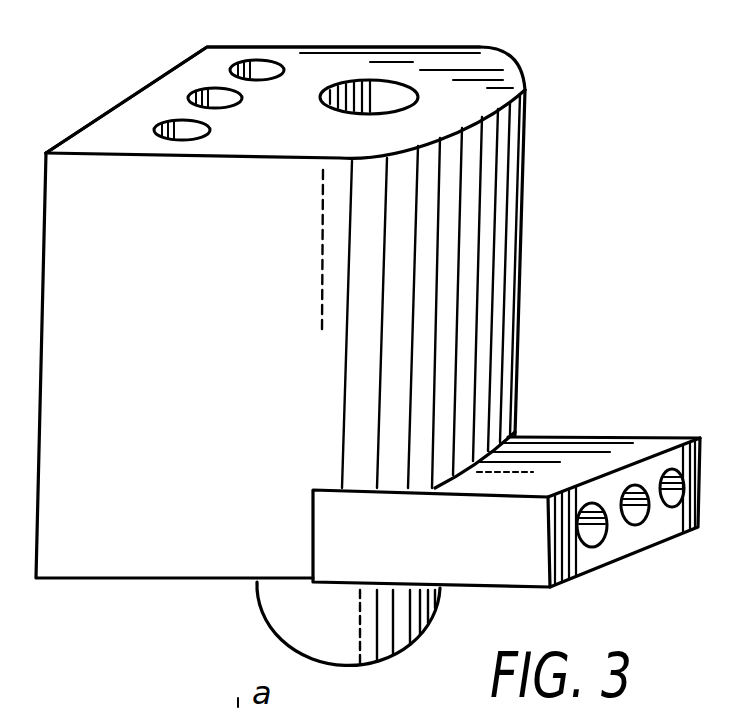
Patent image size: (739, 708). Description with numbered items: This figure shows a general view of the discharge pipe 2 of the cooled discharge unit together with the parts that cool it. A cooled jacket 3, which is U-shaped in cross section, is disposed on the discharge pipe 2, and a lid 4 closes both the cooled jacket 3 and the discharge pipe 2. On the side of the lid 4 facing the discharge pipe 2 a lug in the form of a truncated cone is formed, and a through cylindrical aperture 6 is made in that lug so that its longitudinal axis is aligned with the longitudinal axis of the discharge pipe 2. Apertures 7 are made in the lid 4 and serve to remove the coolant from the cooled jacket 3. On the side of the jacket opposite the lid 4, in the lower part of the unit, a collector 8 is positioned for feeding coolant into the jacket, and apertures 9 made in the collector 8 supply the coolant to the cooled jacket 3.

The discharge pipe 2 is at (258, 627).
The cooled jacket 3 is at (525, 270).
The lid 4 is at (117, 124).
The through cylindrical aperture 6 is at (353, 82).
The apertures 7 is at (230, 67).
The collector 8 is at (643, 437).
The apertures 9 is at (670, 508).